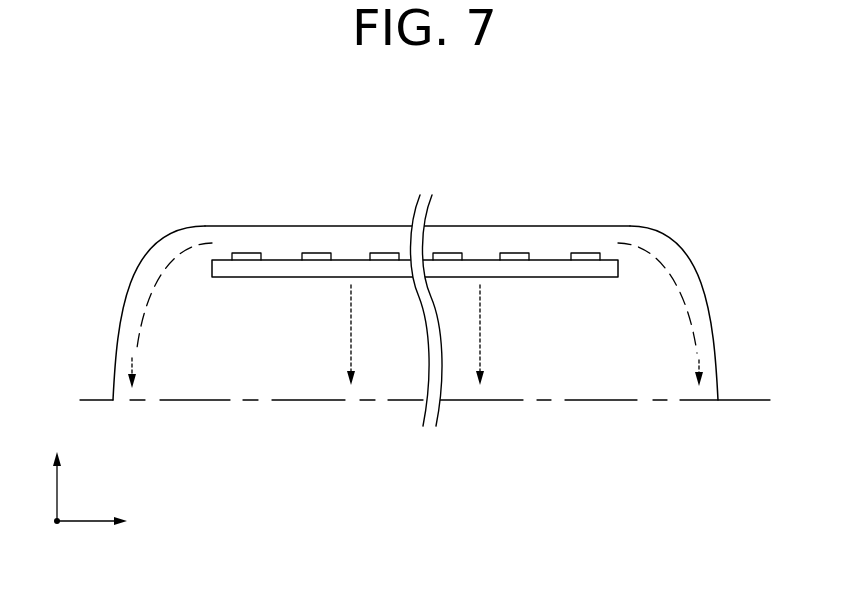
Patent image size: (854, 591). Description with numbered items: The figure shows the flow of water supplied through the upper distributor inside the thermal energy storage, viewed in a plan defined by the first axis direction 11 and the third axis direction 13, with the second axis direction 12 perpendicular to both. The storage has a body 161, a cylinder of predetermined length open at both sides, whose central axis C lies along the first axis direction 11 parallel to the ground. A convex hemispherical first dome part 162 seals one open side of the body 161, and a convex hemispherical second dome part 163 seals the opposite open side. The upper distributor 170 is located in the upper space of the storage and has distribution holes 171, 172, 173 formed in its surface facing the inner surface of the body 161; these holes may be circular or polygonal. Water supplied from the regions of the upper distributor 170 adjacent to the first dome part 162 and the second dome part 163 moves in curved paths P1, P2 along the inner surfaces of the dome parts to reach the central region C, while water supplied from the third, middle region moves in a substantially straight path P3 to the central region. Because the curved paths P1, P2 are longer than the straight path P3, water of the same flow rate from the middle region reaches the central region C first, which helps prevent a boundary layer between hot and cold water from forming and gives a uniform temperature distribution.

The body 161 is at (483, 225).
The first dome part 162 is at (128, 303).
The second dome part 163 is at (703, 298).
The upper distributor 170 is at (542, 259).
The distribution hole 171 is at (246, 256).
The distribution hole 172 is at (316, 256).
The distribution hole 173 is at (384, 256).
The curved path P1 is at (137, 342).
The curved path P2 is at (695, 338).
The straight path P3 is at (480, 328).
The central axis C is at (435, 400).
The first axis direction 11 is at (106, 522).
The second axis direction 12 is at (58, 540).
The third axis direction 13 is at (58, 471).